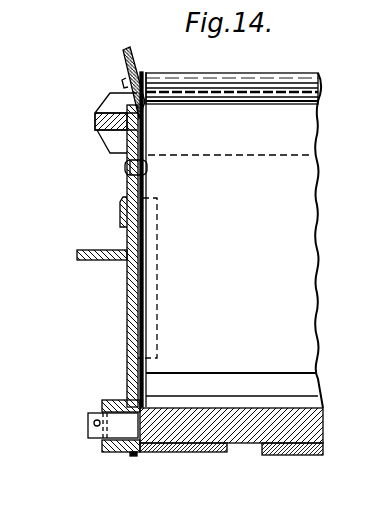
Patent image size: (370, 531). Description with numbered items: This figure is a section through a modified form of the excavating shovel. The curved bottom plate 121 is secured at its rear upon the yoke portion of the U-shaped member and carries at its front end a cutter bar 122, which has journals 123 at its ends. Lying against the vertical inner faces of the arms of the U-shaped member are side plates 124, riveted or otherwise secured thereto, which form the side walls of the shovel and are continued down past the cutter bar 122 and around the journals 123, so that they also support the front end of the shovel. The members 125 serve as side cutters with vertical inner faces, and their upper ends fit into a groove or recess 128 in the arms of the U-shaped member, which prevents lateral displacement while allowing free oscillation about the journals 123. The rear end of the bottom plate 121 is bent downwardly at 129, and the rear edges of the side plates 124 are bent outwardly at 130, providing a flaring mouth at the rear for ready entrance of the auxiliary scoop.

The curved bottom plate 121 is at (196, 372).
The cutter bar 122 is at (212, 417).
The journals 123 is at (92, 430).
The side plates 124 is at (143, 192).
The members (side cutters) 125 is at (127, 338).
The groove or recess 128 is at (120, 208).
The downwardly bent rear end of the plate 129 is at (235, 80).
The outwardly bent rear edges of the side plates 130 is at (124, 63).